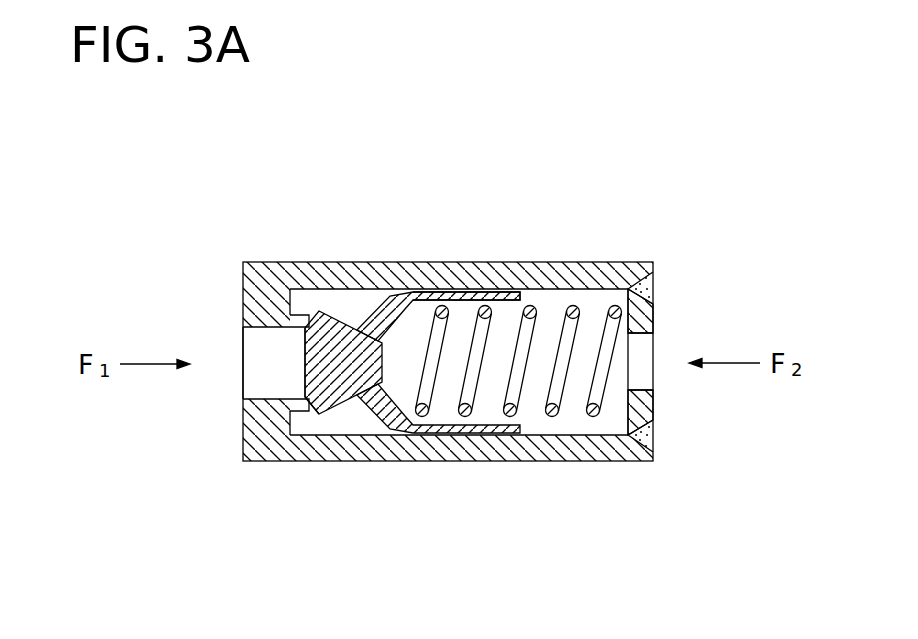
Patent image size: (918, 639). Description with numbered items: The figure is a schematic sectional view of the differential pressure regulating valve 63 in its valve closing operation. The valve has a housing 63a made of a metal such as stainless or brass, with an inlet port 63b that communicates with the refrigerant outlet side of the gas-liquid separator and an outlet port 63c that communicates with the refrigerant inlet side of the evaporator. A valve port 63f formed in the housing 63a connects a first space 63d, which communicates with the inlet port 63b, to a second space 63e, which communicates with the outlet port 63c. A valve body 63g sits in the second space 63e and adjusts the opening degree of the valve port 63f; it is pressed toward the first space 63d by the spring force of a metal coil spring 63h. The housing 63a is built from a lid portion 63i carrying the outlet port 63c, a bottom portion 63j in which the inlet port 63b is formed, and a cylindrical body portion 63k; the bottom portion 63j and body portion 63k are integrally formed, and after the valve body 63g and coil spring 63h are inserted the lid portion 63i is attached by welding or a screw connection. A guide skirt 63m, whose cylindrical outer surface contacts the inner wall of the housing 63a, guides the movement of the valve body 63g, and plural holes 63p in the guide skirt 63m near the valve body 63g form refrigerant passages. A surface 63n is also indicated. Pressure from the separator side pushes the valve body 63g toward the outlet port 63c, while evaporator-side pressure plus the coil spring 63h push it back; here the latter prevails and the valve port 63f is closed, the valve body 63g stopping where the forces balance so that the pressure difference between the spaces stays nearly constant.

The differential pressure regulating valve 63 is at (608, 252).
The housing 63a is at (412, 272).
The inlet port 63b is at (248, 372).
The outlet port 63c is at (655, 382).
The first space 63d is at (248, 426).
The second space 63e is at (610, 420).
The valve port 63f is at (298, 368).
The valve body 63g is at (330, 382).
The coil spring 63h is at (567, 388).
The lid portion 63i is at (655, 310).
The bottom portion 63j is at (243, 300).
The body portion 63k is at (322, 422).
The guide skirt 63m is at (448, 280).
The bore inner surface 63n is at (505, 291).
The holes 63p is at (373, 313).